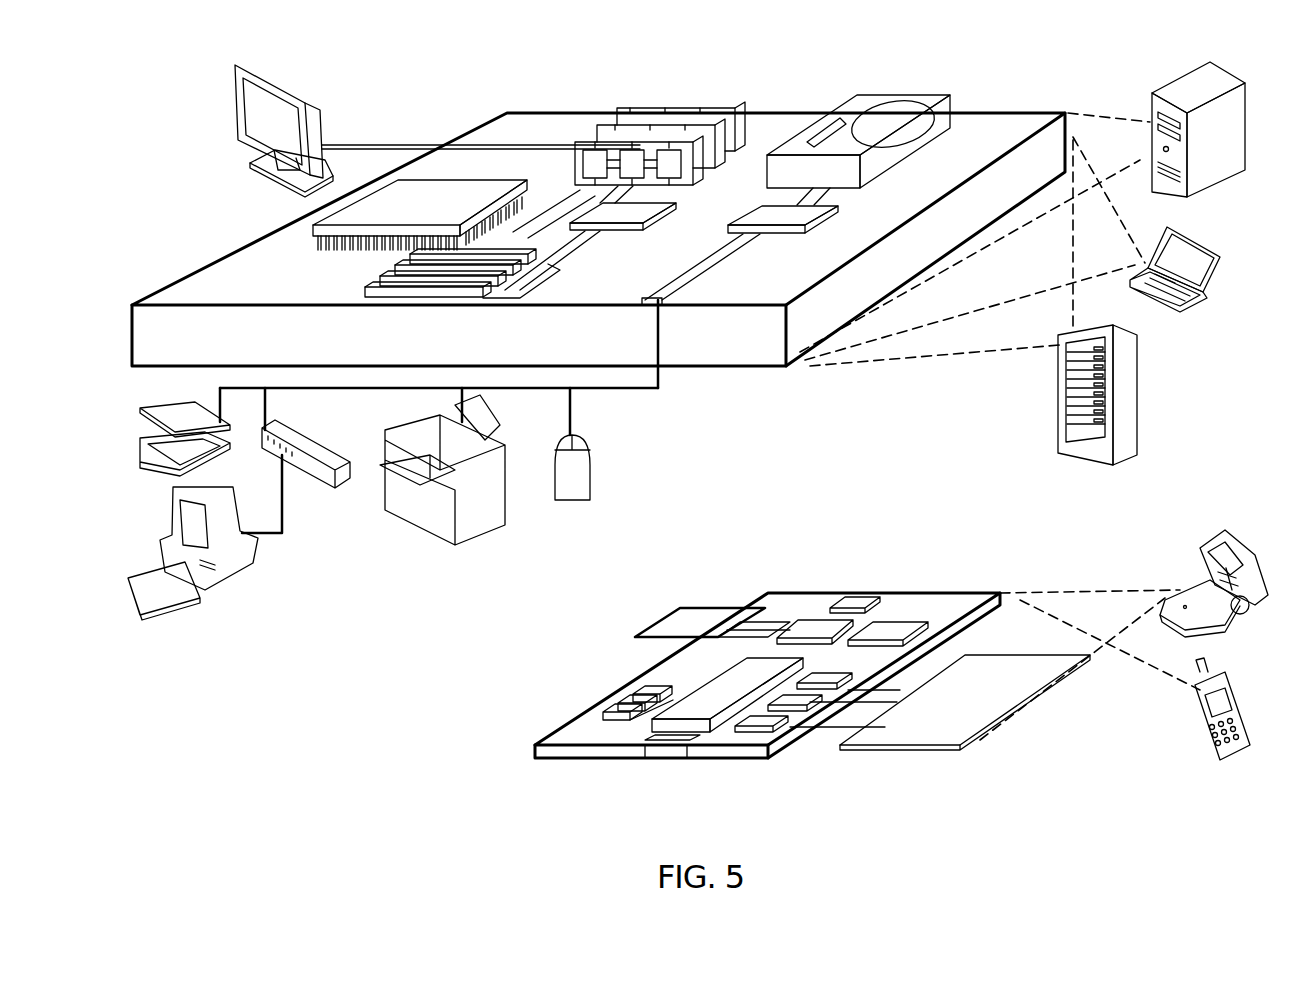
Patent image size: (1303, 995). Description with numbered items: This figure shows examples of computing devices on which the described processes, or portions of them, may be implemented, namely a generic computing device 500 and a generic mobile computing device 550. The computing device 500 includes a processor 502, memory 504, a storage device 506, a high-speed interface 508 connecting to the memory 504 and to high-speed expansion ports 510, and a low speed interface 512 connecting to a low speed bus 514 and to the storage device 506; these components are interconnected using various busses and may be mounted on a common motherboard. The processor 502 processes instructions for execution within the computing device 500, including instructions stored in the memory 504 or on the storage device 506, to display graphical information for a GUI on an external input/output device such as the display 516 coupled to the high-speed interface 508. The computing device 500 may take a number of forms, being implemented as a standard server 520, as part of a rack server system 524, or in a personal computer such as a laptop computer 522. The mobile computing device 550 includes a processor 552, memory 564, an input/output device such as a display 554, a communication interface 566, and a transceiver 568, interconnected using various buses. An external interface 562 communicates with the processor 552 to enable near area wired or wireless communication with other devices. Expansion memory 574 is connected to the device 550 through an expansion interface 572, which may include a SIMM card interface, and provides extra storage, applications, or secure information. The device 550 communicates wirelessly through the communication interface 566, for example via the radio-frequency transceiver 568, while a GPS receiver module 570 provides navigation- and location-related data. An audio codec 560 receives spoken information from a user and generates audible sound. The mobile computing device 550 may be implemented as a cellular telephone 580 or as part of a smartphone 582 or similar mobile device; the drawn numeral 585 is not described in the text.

The computing device 500 is at (443, 92).
The processor 502 is at (313, 238).
The memory 504 is at (630, 115).
The storage device 506 is at (855, 107).
The high-speed interface 508 is at (600, 215).
The high-speed expansion ports 510 is at (385, 291).
The low speed interface 512 is at (782, 213).
The low speed bus 514 is at (668, 307).
The display 516 is at (238, 75).
The standard server 520 is at (1148, 107).
The laptop computer 522 is at (1180, 240).
The rack server system 524 is at (1063, 432).
The mobile computing device 550 is at (751, 581).
The processor 552 is at (707, 733).
The display 554 is at (963, 748).
The audio codec 560 is at (820, 688).
The external interface 562 is at (668, 758).
The memory 564 is at (620, 718).
The communication interface 566 is at (815, 628).
The transceiver 568 is at (888, 628).
The GPS receiver module 570 is at (856, 603).
The expansion interface 572 is at (745, 610).
The expansion memory 574 is at (678, 610).
The cellular telephone 580 is at (1226, 545).
The smartphone 582 is at (1210, 674).
The component 585 is at (808, 708).